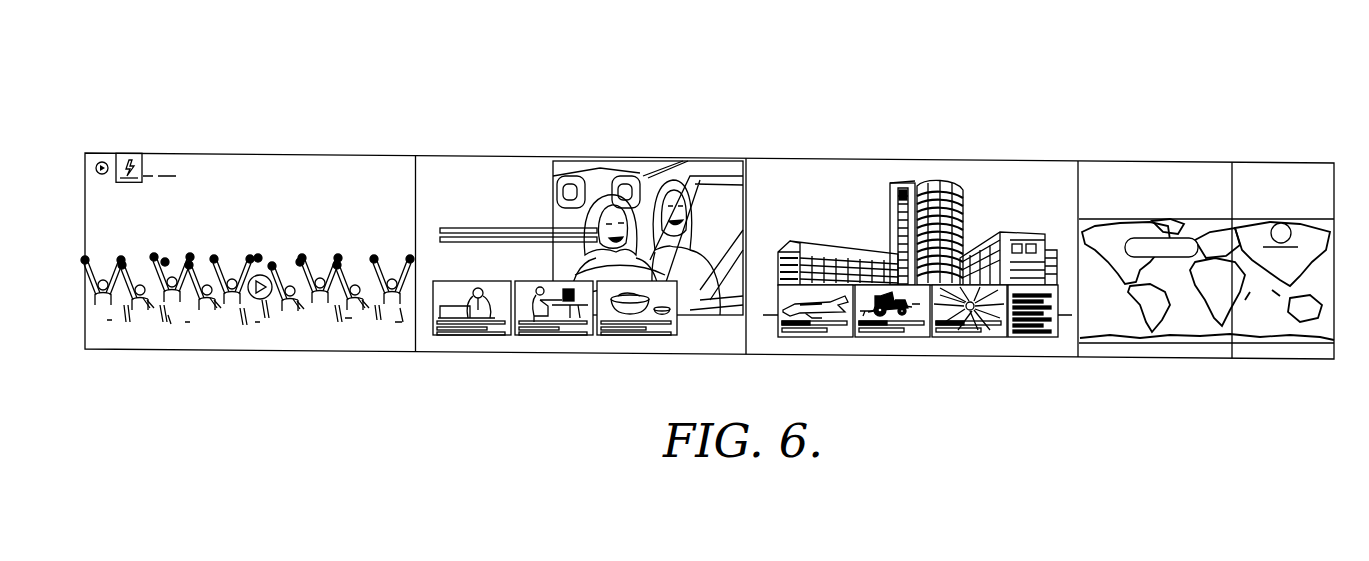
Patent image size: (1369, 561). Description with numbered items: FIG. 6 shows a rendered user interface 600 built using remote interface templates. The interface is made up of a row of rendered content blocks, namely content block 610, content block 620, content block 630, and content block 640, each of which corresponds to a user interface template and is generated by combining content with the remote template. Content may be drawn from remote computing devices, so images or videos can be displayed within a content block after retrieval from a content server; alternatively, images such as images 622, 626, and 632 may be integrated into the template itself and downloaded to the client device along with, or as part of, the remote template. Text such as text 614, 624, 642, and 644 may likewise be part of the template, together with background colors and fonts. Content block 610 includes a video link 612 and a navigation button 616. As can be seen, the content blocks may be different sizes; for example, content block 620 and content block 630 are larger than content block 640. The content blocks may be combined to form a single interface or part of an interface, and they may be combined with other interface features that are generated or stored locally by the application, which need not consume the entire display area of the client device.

The user interface 600 is at (459, 75).
The content block 610 is at (235, 345).
The video link 612 is at (267, 303).
The text 614 is at (281, 186).
The navigation button 616 is at (163, 176).
The content block 620 is at (474, 188).
The image 622 is at (472, 336).
The text 624 is at (517, 212).
The image 626 is at (643, 217).
The content block 630 is at (1035, 213).
The image 632 is at (820, 337).
The content block 640 is at (1177, 325).
The text 642 is at (1130, 180).
The text 644 is at (1260, 180).